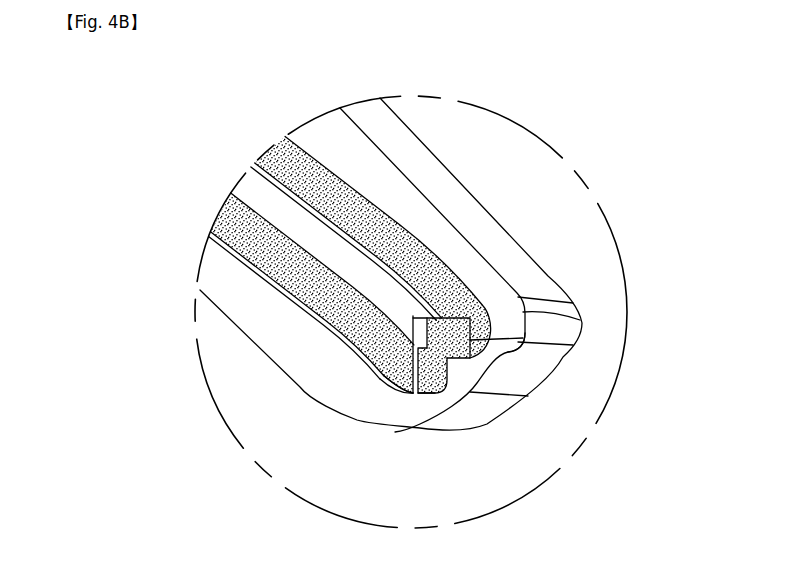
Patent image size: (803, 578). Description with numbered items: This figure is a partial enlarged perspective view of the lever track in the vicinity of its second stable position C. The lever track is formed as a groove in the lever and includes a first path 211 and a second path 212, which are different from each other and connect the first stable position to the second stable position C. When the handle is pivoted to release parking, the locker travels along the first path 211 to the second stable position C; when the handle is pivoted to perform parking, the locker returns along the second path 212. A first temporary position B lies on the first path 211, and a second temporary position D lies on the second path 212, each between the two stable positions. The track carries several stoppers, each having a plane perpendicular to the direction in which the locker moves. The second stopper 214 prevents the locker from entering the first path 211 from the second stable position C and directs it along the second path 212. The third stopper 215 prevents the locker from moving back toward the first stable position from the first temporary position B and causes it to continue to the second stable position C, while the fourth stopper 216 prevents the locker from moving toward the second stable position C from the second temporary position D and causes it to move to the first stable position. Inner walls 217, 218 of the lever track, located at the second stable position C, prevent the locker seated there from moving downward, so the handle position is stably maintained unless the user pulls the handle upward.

The first path 211 is at (320, 247).
The second path 212 is at (348, 196).
The second stopper 214 is at (480, 366).
The third stopper 215 is at (397, 393).
The fourth stopper 216 is at (512, 342).
The inner wall 217 is at (392, 346).
The inner wall 218 is at (442, 317).
The first temporary position B is at (432, 395).
The second stable position C is at (500, 342).
The second temporary position D is at (580, 320).